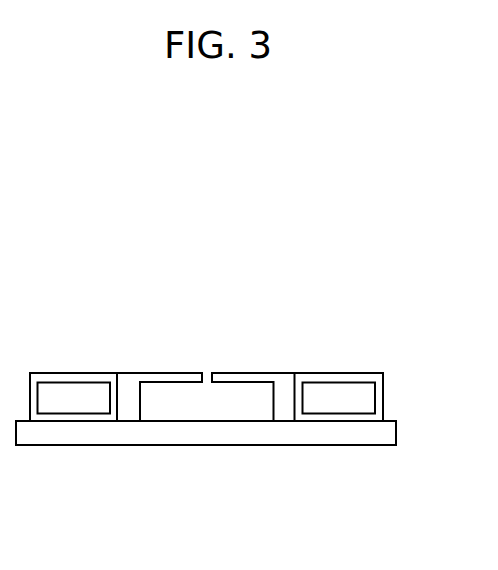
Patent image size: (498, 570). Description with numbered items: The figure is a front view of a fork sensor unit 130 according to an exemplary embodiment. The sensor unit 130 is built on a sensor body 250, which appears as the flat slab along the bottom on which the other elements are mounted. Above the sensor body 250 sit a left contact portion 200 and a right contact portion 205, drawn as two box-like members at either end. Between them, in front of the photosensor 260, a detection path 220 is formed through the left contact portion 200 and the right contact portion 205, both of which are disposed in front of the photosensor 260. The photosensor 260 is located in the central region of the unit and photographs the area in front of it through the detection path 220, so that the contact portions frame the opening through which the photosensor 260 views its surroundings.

The sensor unit 130 is at (312, 455).
The left contact portion 200 is at (341, 373).
The right contact portion 205 is at (73, 373).
The detection path 220 is at (168, 388).
The sensor body 250 is at (72, 433).
The photosensor 260 is at (205, 412).